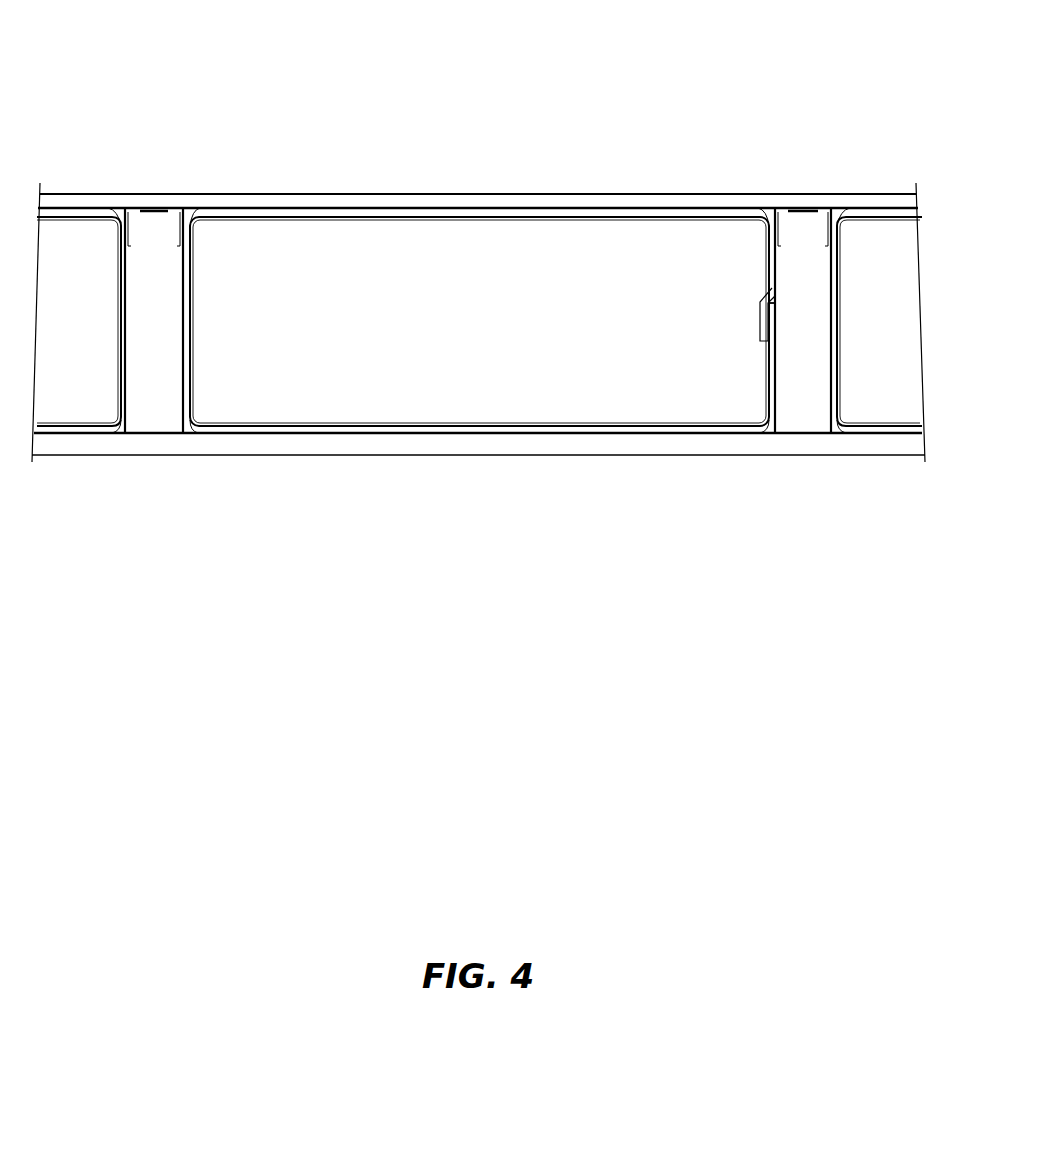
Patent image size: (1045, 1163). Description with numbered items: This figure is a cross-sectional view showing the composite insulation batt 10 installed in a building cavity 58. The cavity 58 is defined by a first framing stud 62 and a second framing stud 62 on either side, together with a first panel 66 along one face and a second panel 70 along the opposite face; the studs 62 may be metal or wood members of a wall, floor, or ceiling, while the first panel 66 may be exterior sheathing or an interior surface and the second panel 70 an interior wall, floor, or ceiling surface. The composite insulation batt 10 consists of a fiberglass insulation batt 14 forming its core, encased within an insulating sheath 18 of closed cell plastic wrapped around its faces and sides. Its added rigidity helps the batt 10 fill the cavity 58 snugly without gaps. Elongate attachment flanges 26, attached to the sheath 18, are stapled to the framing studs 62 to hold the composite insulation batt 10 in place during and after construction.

The composite insulation batt 10 is at (493, 302).
The fiberglass insulation batt 14 is at (540, 278).
The insulating sheath 18 is at (610, 212).
The attachment flanges 26 is at (163, 207).
The building cavity 58 is at (362, 460).
The framing stud 62 is at (158, 382).
The first panel 66 is at (482, 445).
The second panel 70 is at (273, 200).